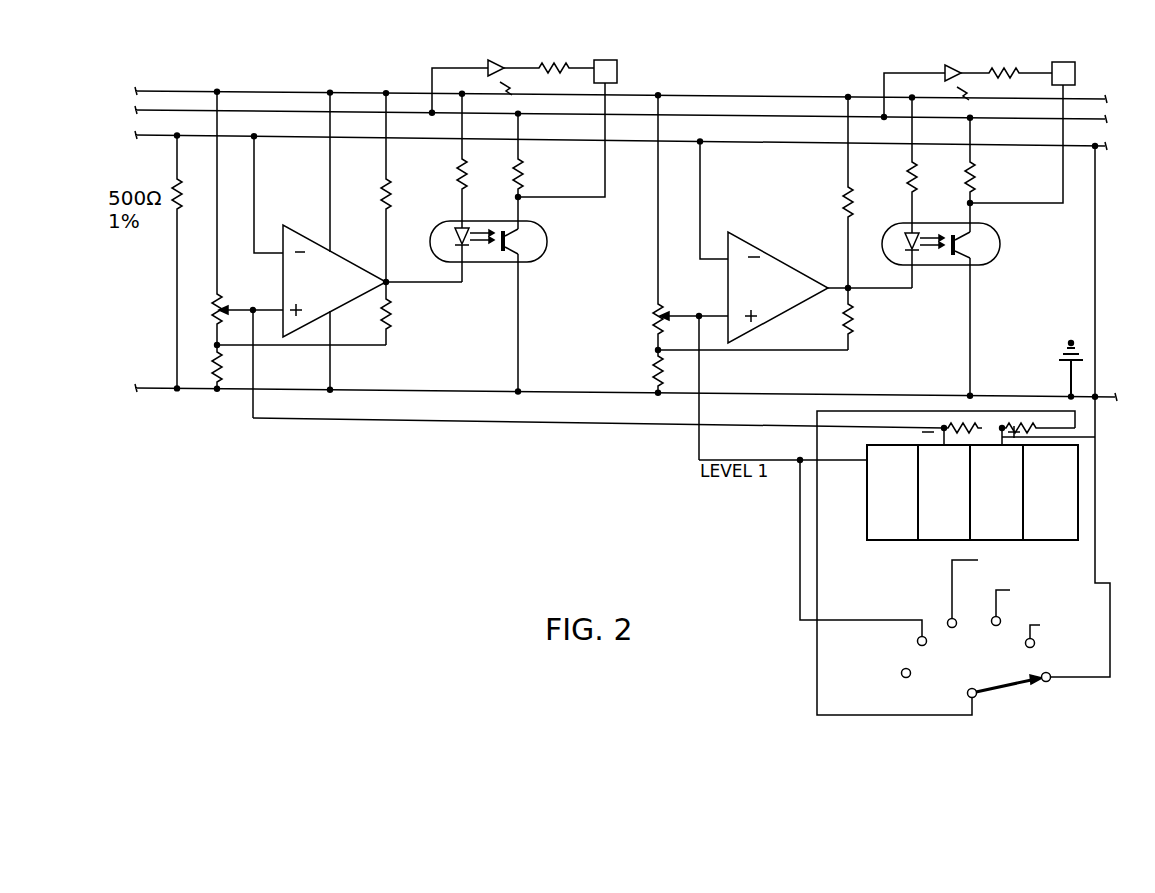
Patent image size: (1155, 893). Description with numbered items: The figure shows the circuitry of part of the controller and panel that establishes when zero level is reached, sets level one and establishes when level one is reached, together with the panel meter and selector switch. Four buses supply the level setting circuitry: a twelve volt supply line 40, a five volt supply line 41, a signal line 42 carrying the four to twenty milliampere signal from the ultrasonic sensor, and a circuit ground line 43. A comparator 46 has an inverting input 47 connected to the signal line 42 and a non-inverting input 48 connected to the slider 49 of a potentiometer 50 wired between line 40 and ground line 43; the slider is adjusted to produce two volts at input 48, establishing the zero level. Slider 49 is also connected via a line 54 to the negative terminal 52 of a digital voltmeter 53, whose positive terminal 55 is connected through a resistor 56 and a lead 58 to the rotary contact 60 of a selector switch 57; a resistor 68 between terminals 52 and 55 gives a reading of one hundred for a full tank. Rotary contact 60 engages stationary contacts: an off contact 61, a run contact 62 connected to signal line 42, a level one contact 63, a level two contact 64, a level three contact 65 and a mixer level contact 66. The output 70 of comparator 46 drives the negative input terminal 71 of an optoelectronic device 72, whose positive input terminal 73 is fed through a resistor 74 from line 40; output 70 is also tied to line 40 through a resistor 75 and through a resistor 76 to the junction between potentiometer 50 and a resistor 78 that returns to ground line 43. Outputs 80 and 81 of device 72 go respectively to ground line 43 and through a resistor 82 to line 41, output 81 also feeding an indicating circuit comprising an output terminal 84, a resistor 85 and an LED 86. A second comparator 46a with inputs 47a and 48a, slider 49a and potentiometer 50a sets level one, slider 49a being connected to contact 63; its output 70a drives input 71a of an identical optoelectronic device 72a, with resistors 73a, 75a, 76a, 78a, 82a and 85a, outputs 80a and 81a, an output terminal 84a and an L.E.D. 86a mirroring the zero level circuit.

The 12 volt supply line 40 is at (266, 91).
The 5 volt supply line 41 is at (252, 110).
The signal line 42 is at (310, 137).
The circuit ground line 43 is at (390, 390).
The comparator 46 is at (322, 248).
The inverting input 47 is at (278, 248).
The non-inverting input 48 is at (280, 308).
The slider 49 is at (237, 313).
The potentiometer 50 is at (212, 335).
The negative terminal 52 is at (938, 426).
The digital voltmeter 53 is at (863, 485).
The line 54 is at (420, 421).
The positive terminal 55 is at (1070, 434).
The resistor 56 is at (1022, 420).
The selector switch 57 is at (893, 656).
The lead 58 is at (830, 535).
The rotary contact 60 is at (973, 698).
The off contact 61 is at (904, 677).
The run contact 62 is at (1048, 681).
The level 1 contact 63 is at (925, 645).
The level 2 contact 64 is at (949, 620).
The level 3 contact 65 is at (996, 626).
The mixer level contact 66 is at (1034, 647).
The resistor 68 is at (962, 420).
The output 70 is at (384, 280).
The negative input terminal 71 is at (462, 268).
The optoelectronic device 72 is at (545, 252).
The positive input terminal 73 is at (455, 225).
The resistor 74 is at (468, 180).
The resistor 75 is at (390, 200).
The resistor 76 is at (390, 325).
The resistor 78 is at (212, 370).
The output 80 is at (520, 270).
The output 81 is at (523, 216).
The resistor 82 is at (525, 182).
The output terminal 84 is at (616, 75).
The resistor 85 is at (553, 68).
The LED 86 is at (480, 68).
The comparator 46a is at (775, 258).
The inverting input 47a is at (725, 258).
The non-inverting input 48a is at (724, 315).
The slider 49a is at (699, 350).
The potentiometer 50a is at (656, 335).
The output 70a is at (835, 285).
The input 71a is at (912, 270).
The optoelectronic device 72a is at (992, 257).
The resistor 73a is at (852, 200).
The resistor 75a is at (916, 163).
The resistor 76a is at (849, 336).
The resistor 78a is at (664, 378).
The output conductor 80a is at (972, 270).
The phototransistor 81a is at (985, 223).
The resistor 82a is at (997, 174).
The output terminal 84a is at (1078, 78).
The resistor 85a is at (1005, 73).
The L.E.D. 86a is at (942, 73).